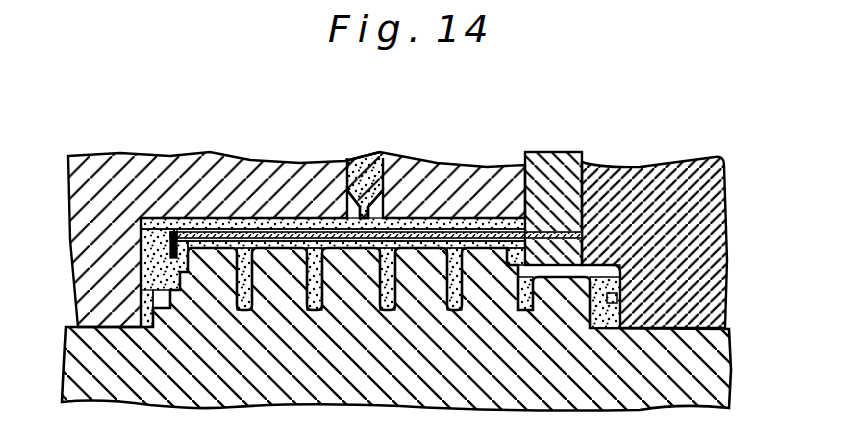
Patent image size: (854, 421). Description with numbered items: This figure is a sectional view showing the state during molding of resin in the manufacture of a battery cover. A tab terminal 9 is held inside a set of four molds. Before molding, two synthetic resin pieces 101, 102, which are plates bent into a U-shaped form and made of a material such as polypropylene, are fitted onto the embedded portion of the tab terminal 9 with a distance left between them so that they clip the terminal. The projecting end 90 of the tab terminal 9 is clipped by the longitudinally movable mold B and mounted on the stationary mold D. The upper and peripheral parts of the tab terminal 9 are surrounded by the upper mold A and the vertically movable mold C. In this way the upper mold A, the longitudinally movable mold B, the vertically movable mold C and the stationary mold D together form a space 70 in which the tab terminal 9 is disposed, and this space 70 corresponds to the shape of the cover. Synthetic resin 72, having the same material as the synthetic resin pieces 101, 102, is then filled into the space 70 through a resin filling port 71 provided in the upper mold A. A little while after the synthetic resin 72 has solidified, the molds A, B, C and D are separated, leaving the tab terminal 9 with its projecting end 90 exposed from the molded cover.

The upper mold A is at (113, 163).
The longitudinally movable mold B is at (560, 152).
The vertically movable mold C is at (668, 173).
The stationary mold D is at (698, 362).
The tab terminal 9 is at (278, 233).
The space 70 is at (143, 255).
The resin filling port 71 is at (357, 158).
The synthetic resin 72 is at (142, 295).
The projecting end 90 is at (558, 232).
The synthetic resin piece 101 is at (205, 227).
The synthetic resin piece 102 is at (482, 222).